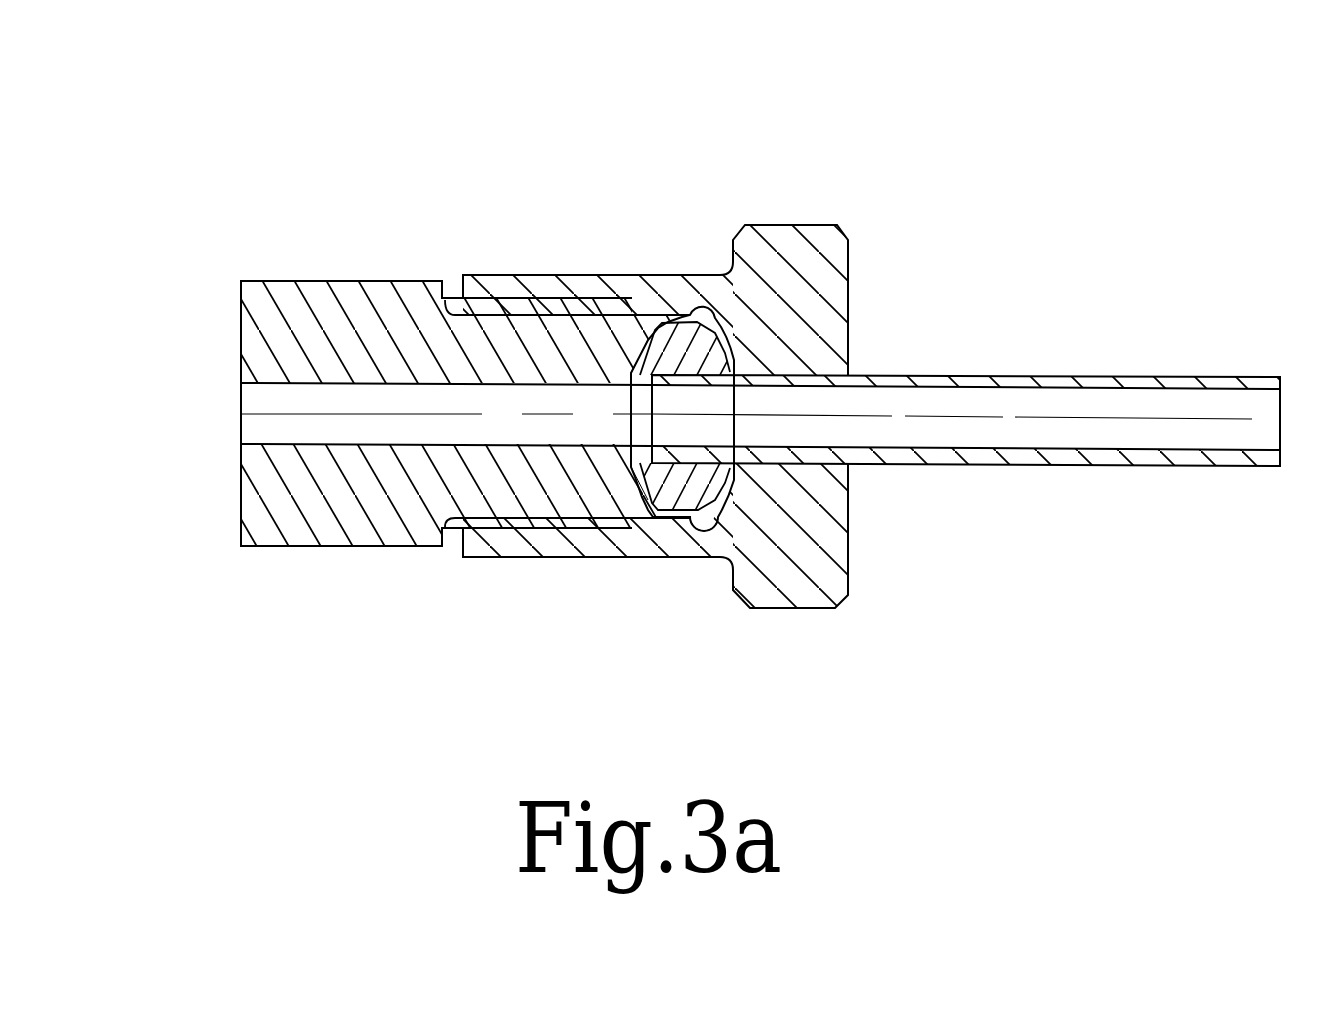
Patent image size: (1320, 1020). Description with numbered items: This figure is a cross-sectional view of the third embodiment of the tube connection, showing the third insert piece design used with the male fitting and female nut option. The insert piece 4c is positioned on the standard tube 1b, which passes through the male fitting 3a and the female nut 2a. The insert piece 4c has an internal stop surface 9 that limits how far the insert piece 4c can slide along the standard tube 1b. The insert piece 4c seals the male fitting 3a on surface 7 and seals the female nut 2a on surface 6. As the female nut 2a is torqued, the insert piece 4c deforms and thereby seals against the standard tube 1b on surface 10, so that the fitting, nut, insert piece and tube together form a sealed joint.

The male fitting 3a is at (326, 280).
The female nut 2a is at (855, 292).
The standard tube 1b is at (1090, 467).
The sealing surface on tube 10 is at (708, 470).
The sealing surface for female nut 6 is at (733, 330).
The internal stop surface 9 is at (655, 370).
The sealing surface for male fitting 7 is at (633, 320).
The insert piece 4c is at (655, 518).